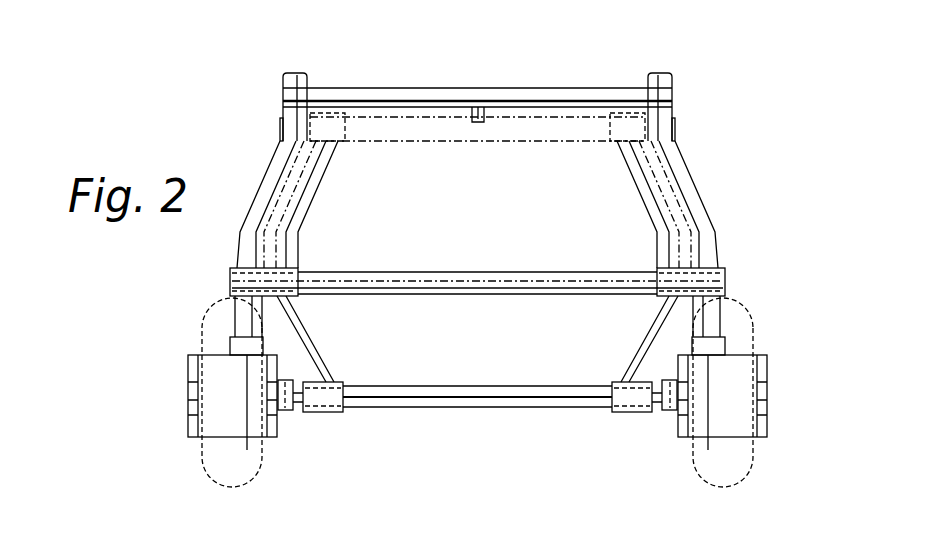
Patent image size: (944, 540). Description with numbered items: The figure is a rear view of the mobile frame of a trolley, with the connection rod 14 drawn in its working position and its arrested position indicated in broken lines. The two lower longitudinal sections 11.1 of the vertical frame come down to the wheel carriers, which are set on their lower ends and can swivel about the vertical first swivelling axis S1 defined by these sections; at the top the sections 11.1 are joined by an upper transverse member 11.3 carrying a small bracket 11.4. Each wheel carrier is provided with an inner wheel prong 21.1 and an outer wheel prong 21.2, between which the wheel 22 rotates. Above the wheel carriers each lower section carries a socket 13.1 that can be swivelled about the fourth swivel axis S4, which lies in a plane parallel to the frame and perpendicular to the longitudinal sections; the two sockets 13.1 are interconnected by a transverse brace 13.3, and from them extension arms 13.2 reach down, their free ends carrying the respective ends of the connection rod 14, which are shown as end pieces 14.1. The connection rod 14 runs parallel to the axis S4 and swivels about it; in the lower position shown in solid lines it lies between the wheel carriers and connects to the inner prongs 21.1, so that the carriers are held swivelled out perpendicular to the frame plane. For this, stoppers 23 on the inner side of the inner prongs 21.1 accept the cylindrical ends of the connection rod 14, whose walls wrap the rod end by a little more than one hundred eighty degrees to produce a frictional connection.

The lower longitudinal section 11.1 is at (283, 85).
The upper cross member 11.3 is at (410, 88).
The bracket 11.4 is at (490, 105).
The socket 13.1 is at (297, 268).
The extension arm 13.2 is at (304, 331).
The transverse brace 13.3 is at (392, 274).
The connection rod 14 is at (517, 386).
The axle end piece 14.1 is at (309, 382).
The inner wheel prong 21.1 is at (277, 438).
The outer wheel prong 21.2 is at (188, 426).
The wheel 22 is at (198, 341).
The stopper 23 is at (285, 412).
The first swivelling axis S1 is at (243, 378).
The fourth swivel axis S4 is at (230, 282).